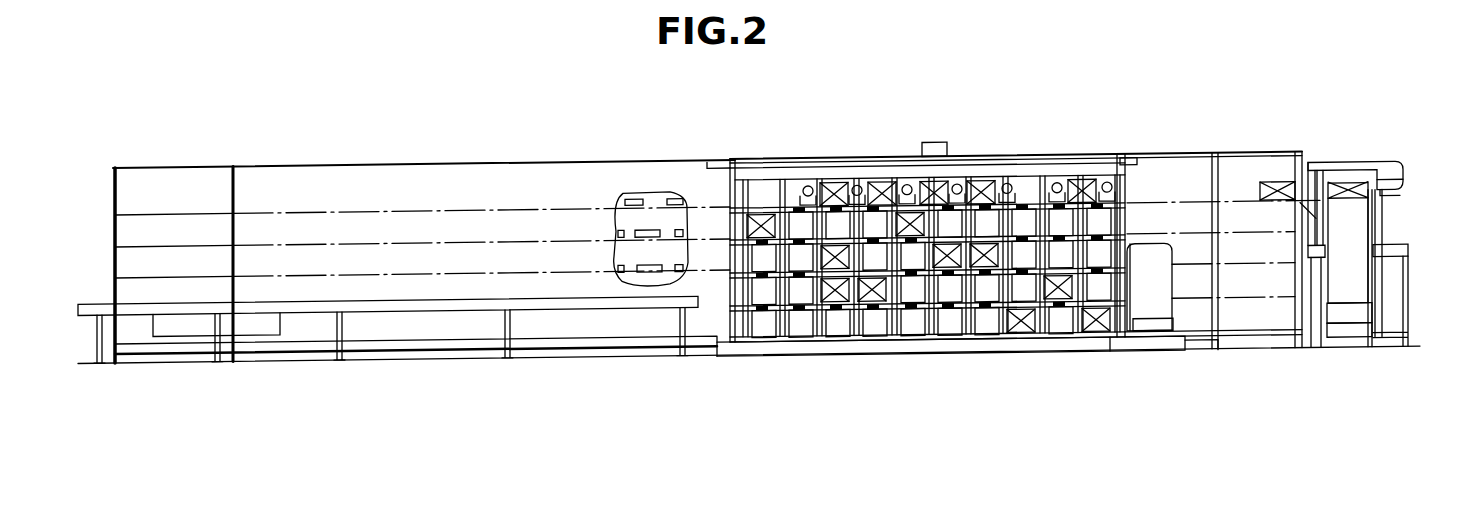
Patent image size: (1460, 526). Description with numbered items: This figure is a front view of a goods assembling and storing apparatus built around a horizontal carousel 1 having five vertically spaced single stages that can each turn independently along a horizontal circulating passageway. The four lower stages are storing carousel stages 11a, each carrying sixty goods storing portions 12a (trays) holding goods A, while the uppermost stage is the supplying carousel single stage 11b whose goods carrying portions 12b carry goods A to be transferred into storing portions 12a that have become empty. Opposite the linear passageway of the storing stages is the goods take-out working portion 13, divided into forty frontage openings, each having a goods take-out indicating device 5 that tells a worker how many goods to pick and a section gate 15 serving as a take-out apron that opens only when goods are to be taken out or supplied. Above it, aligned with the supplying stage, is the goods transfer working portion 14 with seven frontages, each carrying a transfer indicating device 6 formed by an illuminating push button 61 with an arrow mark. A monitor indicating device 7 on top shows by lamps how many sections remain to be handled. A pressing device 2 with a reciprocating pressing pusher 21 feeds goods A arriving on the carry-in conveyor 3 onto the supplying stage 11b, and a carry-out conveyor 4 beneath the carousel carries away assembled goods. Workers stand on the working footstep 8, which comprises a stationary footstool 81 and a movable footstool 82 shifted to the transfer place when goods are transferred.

The carousel 1 is at (608, 183).
The storing carousel stage 11a is at (310, 219).
The supplying carousel single stage 11b is at (485, 187).
The goods storing portion 12a is at (642, 237).
The goods carrying portion 12b is at (638, 194).
The goods take-out working portion 13 is at (800, 299).
The goods transfer working portion 14 is at (790, 197).
The section gate 15 is at (835, 234).
The carry-out conveyor 4 is at (433, 303).
The goods take-out indicating device 5 is at (945, 315).
The transfer indicating device 6 is at (1018, 182).
The illuminating type push button 61 is at (1007, 186).
The monitor indicating device 7 is at (940, 146).
The working footstep 8 is at (908, 350).
The stationary footstool 81 is at (1113, 348).
The movable footstool 82 is at (1147, 330).
The pressing device 2 is at (1387, 178).
The pressing pusher 21 is at (1400, 199).
The carry-in conveyor 3 is at (1348, 255).
The goods A is at (1083, 190).